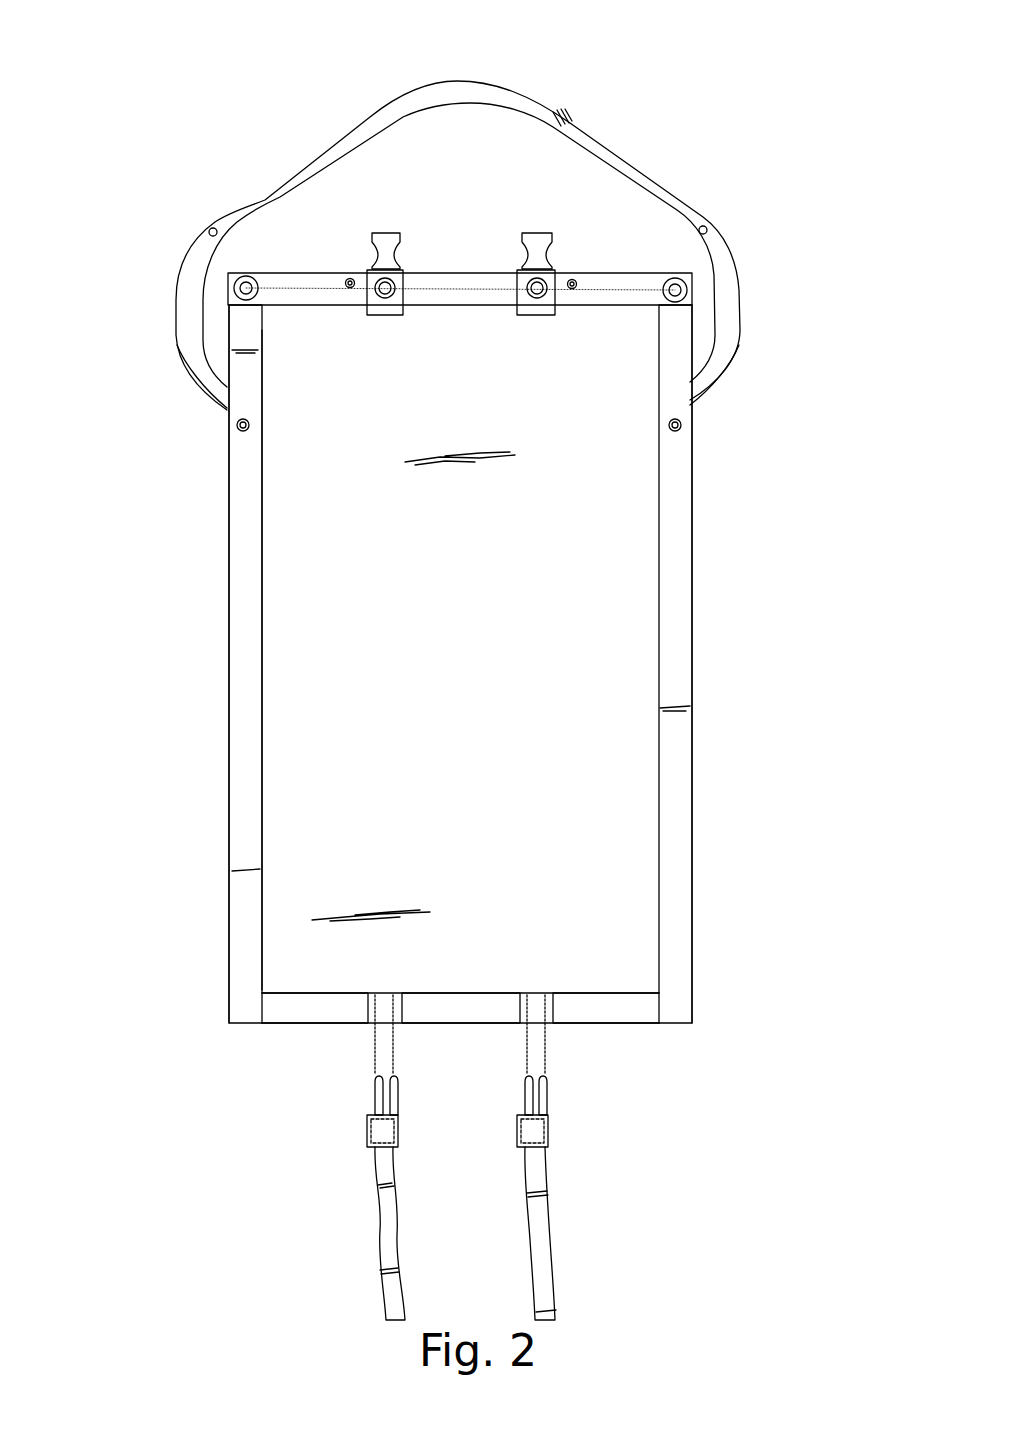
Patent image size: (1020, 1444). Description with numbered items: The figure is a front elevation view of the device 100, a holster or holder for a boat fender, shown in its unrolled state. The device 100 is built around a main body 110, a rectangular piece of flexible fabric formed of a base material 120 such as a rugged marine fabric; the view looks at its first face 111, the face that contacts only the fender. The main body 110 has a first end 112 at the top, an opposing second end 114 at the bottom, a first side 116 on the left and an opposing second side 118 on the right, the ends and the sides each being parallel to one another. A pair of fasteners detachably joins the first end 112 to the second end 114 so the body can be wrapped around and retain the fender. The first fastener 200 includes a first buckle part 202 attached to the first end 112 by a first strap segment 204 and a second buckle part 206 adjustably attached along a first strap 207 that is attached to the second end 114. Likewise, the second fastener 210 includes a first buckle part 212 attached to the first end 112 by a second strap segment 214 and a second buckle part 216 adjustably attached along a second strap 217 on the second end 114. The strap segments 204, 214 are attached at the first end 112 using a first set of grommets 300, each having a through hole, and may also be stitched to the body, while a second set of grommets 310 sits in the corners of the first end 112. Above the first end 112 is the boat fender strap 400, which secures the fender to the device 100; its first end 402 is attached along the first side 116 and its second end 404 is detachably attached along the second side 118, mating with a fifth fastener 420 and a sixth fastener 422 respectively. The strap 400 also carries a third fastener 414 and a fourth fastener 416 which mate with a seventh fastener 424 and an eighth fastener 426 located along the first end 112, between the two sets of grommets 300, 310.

The device 100 is at (890, 386).
The main body 110 is at (318, 857).
The first face 111 is at (312, 627).
The first end 112 is at (283, 277).
The second end 114 is at (623, 1023).
The first side 116 is at (229, 767).
The second side 118 is at (692, 825).
The base material 120 is at (432, 674).
The first fastener 200 is at (345, 1170).
The first buckle part 202 is at (388, 241).
The first strap segment 204 is at (380, 312).
The second buckle part 206 is at (367, 1125).
The first strap 207 is at (385, 1248).
The second fastener 210 is at (560, 1190).
The first buckle part 212 is at (538, 241).
The second strap segment 214 is at (537, 312).
The second buckle part 216 is at (548, 1130).
The second strap 217 is at (540, 1278).
The first set of grommets 300 is at (530, 298).
The second set of grommets 310 is at (240, 288).
The boat fender strap 400 is at (436, 93).
The first end 402 is at (213, 395).
The second end 404 is at (693, 398).
The third fastener 414 is at (208, 228).
The fourth fastener 416 is at (704, 225).
The fifth fastener 420 is at (248, 430).
The sixth fastener 422 is at (678, 430).
The seventh fastener 424 is at (352, 278).
The eighth fastener 426 is at (576, 280).